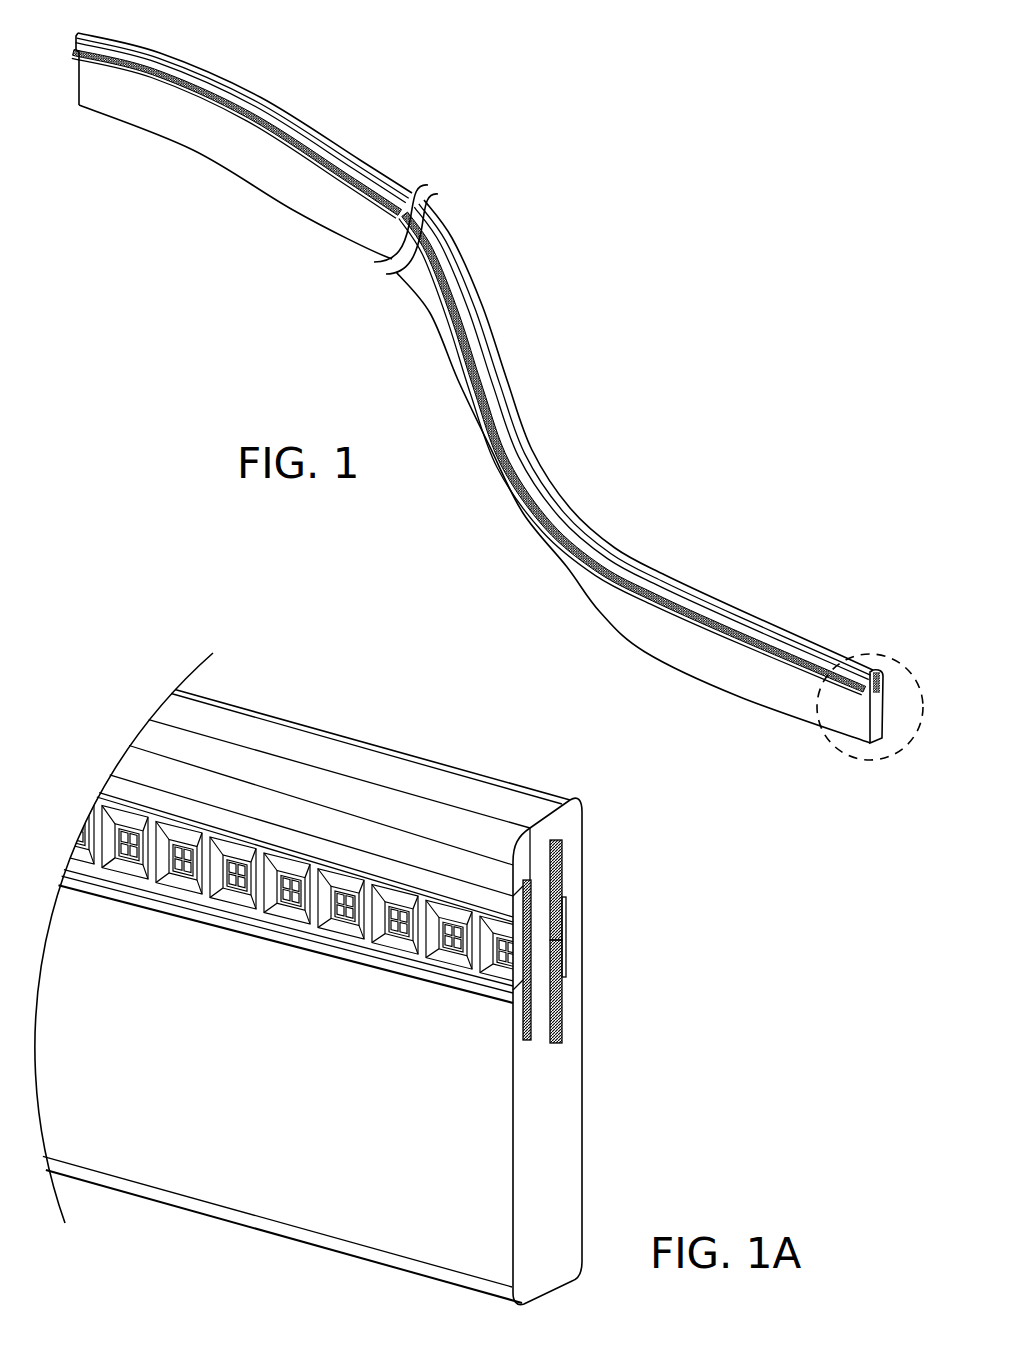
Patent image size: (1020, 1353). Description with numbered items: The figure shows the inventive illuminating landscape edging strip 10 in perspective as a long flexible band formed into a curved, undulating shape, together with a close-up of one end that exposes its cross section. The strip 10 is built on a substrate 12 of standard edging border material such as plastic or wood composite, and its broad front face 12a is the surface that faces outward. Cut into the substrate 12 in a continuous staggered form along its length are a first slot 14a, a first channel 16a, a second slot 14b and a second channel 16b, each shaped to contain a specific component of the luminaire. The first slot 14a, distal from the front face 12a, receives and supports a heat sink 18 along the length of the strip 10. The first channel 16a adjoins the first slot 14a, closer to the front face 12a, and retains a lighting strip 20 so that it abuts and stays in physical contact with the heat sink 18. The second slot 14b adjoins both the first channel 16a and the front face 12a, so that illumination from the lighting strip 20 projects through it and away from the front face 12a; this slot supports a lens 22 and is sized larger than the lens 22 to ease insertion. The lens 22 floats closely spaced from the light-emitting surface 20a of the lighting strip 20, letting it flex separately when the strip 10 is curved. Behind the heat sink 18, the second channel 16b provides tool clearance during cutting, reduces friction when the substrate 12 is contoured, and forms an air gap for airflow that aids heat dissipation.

In FIG. 1, the illuminating landscape edging strip 10 is at (634, 296).
In FIG. 1, the substrate 12 is at (527, 541).
In FIG. 1A, the substrate 12 is at (289, 730).
In FIG. 1A, the front face 12a is at (283, 1085).
In FIG. 1A, the first slot 14a is at (574, 822).
In FIG. 1A, the second slot 14b is at (565, 858).
In FIG. 1A, the first channel 16a is at (565, 1000).
In FIG. 1A, the second channel 16b is at (568, 977).
In FIG. 1A, the heat sink 18 is at (569, 886).
In FIG. 1A, the lighting strip 20 is at (545, 946).
In FIG. 1A, the light-emitting surface 20a is at (335, 883).
In FIG. 1A, the lens 22 is at (533, 962).